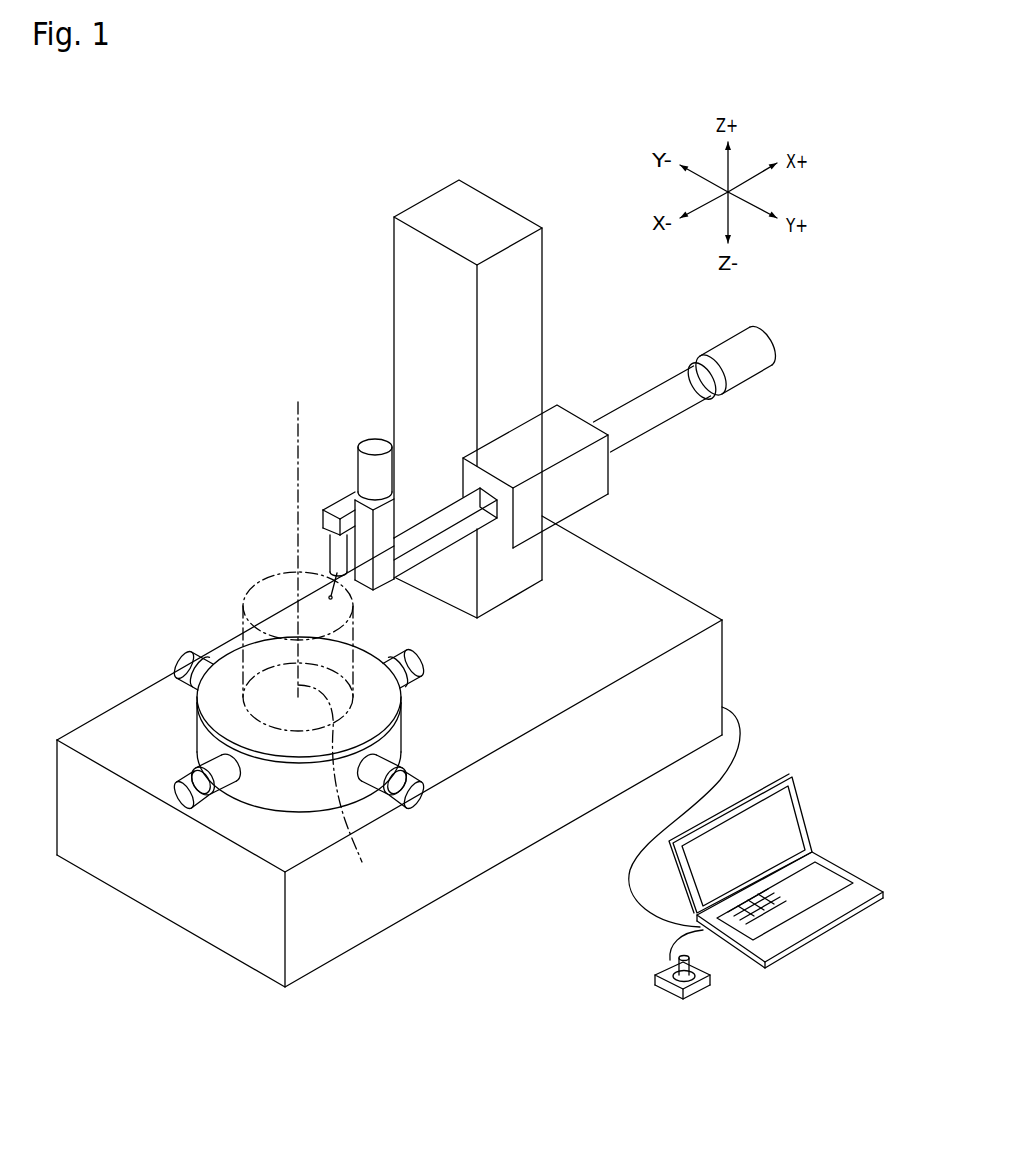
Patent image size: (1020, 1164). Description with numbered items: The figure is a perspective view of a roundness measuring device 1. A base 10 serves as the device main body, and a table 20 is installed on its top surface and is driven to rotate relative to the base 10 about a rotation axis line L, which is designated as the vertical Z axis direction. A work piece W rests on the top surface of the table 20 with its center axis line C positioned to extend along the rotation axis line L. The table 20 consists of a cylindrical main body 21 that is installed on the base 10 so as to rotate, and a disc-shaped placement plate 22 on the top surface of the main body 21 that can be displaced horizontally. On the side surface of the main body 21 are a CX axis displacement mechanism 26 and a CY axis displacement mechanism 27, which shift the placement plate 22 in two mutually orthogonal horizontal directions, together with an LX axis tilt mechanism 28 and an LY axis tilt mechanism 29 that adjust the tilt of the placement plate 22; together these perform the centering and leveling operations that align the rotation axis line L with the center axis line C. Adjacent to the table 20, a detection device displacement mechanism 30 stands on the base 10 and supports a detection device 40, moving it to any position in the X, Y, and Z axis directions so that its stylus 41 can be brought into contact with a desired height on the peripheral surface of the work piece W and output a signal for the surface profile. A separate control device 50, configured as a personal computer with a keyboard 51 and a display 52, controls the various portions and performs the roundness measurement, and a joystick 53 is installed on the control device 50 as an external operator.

The roundness measuring device 1 is at (249, 190).
The base 10 is at (482, 861).
The table 20 is at (236, 665).
The main body 21 is at (285, 797).
The placement plate 22 is at (385, 719).
The CX axis displacement mechanism 26 is at (419, 664).
The CY axis displacement mechanism 27 is at (416, 794).
The LX axis tilt mechanism 28 is at (183, 797).
The LY axis tilt mechanism 29 is at (186, 676).
The detection device displacement mechanism 30 is at (421, 177).
The detection device 40 is at (331, 553).
The stylus 41 is at (328, 594).
The control device 50 is at (801, 750).
The keyboard 51 is at (812, 886).
The display 52 is at (784, 815).
The joystick 53 is at (655, 998).
The work piece W is at (241, 613).
The center axis line C is at (298, 535).
The rotation axis line L is at (339, 783).